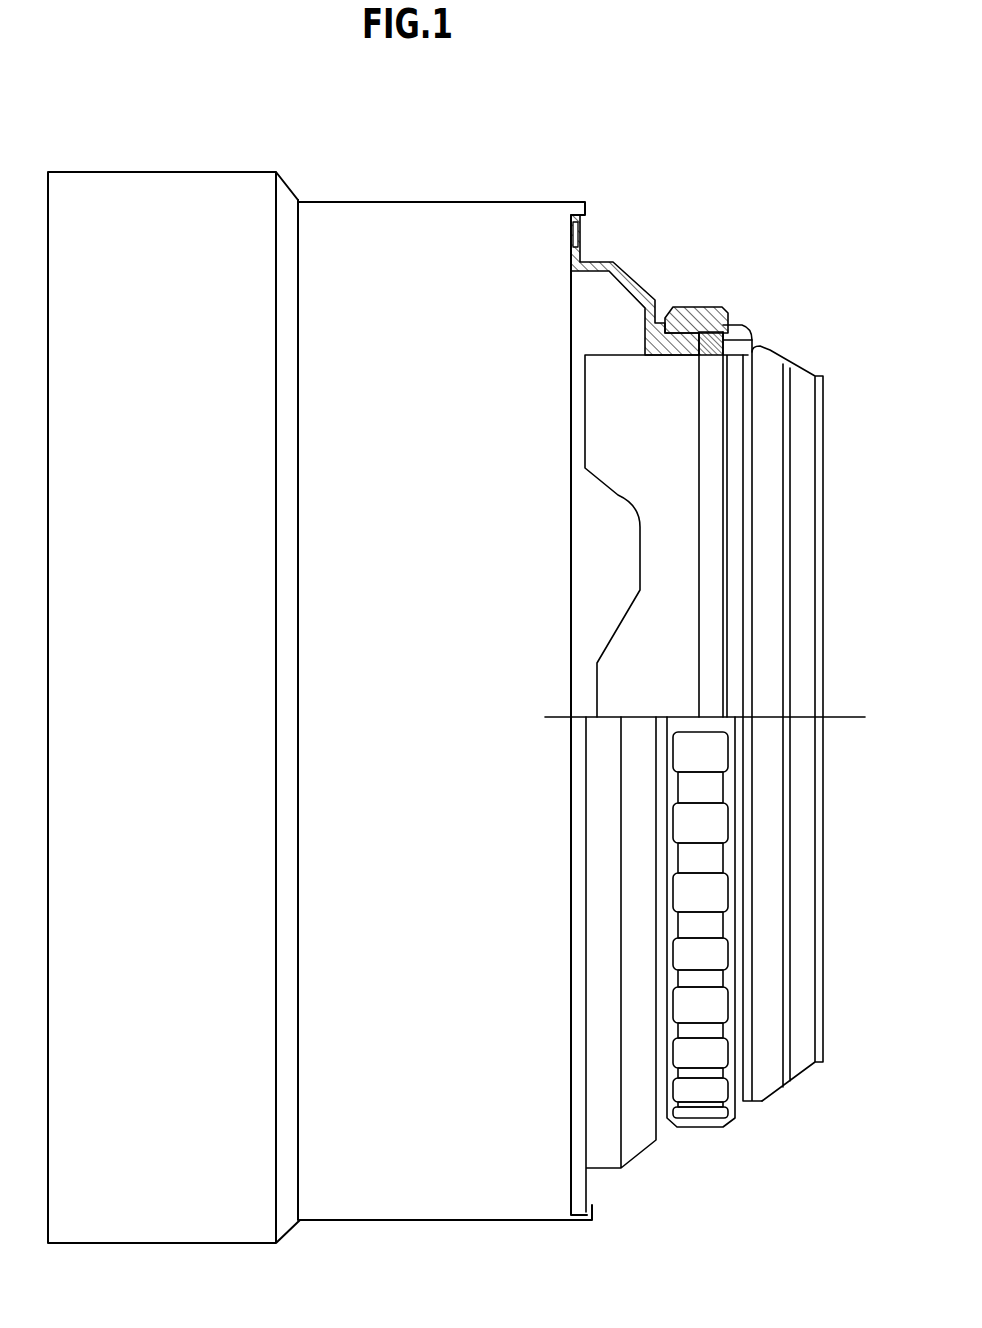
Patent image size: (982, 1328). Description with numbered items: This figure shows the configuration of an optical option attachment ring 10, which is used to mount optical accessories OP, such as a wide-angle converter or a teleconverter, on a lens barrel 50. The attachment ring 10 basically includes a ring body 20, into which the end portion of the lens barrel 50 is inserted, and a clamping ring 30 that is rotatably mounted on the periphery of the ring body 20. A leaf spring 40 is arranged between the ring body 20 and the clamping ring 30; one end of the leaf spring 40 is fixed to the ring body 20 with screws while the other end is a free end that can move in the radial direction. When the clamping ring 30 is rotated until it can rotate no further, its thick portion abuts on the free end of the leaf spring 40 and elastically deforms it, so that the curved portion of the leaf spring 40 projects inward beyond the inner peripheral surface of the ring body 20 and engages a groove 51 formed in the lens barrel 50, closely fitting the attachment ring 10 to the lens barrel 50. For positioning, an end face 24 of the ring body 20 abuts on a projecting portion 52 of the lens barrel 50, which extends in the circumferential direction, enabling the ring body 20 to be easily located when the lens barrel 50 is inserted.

The optical accessories OP is at (443, 215).
The optical option attachment ring 10 is at (675, 280).
The ring body 20 is at (657, 358).
The clamping ring 30 is at (706, 316).
The leaf spring 40 is at (727, 323).
The end face 24 is at (753, 345).
The lens barrel 50 is at (815, 352).
The groove 51 is at (713, 540).
The projecting portion 52 is at (733, 367).